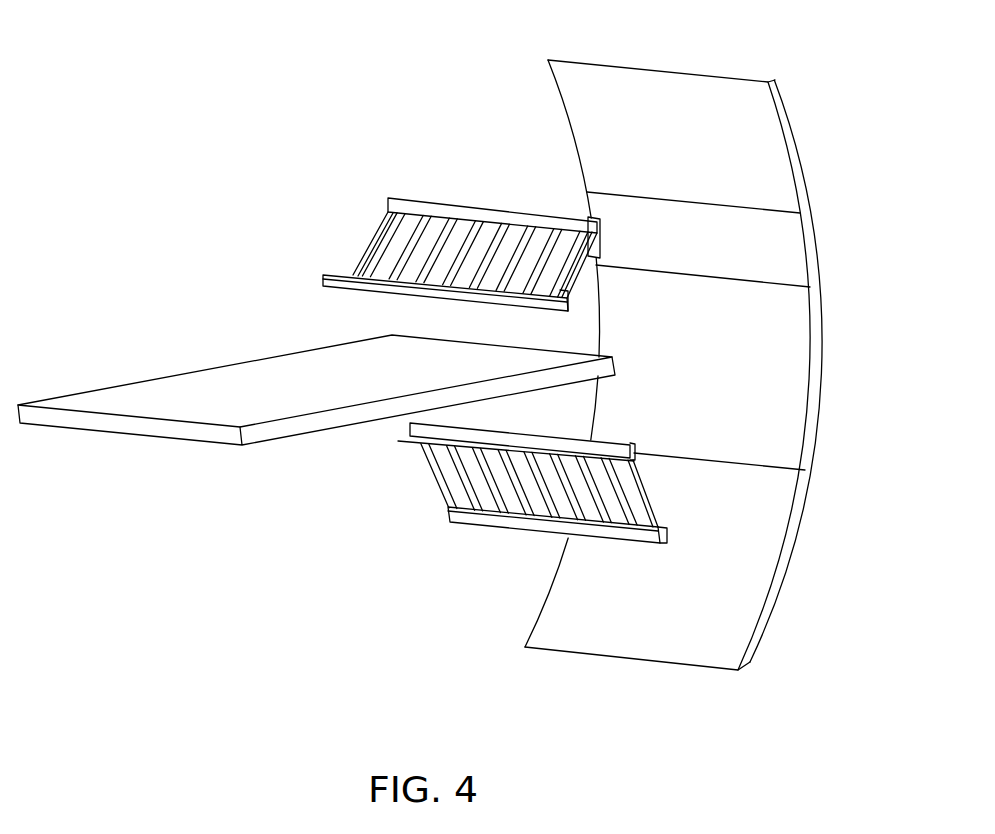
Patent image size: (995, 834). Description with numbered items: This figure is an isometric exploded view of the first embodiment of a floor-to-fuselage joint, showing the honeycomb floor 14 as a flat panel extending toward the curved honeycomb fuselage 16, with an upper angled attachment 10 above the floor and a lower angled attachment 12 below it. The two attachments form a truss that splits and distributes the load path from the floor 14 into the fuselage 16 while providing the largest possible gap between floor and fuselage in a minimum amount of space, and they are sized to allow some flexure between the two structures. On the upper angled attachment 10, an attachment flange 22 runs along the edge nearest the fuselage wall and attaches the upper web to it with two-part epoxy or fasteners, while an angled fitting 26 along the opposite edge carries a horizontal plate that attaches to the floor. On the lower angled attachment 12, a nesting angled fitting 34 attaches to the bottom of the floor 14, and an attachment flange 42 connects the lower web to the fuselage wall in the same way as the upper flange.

The upper angled attachment 10 is at (406, 245).
The lower angled attachment 12 is at (485, 498).
The honeycomb floor 14 is at (110, 398).
The honeycomb fuselage 16 is at (800, 523).
The attachment flange 22 is at (390, 204).
The angled fitting 26 is at (345, 289).
The nesting angled fitting 34 is at (399, 429).
The attachment flange 42 is at (520, 538).